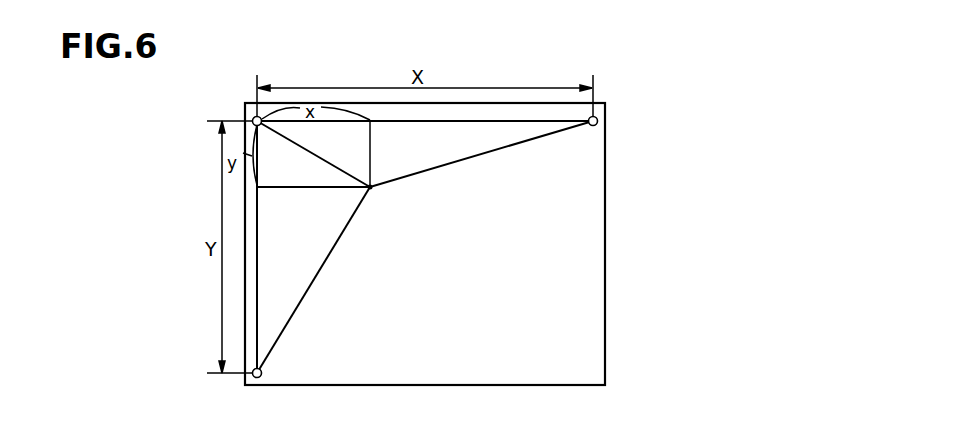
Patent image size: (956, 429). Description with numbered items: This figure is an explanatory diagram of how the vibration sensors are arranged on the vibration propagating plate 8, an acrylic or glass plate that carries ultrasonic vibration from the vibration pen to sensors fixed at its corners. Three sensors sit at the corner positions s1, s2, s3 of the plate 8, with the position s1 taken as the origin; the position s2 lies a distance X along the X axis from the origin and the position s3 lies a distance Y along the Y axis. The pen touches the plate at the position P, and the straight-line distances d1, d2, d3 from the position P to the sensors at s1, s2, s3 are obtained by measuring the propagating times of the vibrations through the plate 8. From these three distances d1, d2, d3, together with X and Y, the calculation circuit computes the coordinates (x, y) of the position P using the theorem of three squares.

The vibration propagating plate 8 is at (605, 277).
The corner position of first vibration sensor (origin) s1 is at (255, 118).
The corner position of second vibration sensor s2 is at (597, 125).
The corner position of third vibration sensor s3 is at (261, 371).
The straight-line distance to first sensor d1 is at (313, 154).
The straight-line distance to second sensor d2 is at (481, 155).
The straight-line distance to third sensor d3 is at (313, 280).
The position of the vibration pen P is at (402, 201).